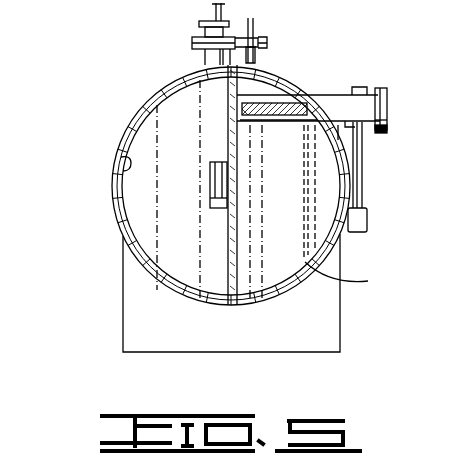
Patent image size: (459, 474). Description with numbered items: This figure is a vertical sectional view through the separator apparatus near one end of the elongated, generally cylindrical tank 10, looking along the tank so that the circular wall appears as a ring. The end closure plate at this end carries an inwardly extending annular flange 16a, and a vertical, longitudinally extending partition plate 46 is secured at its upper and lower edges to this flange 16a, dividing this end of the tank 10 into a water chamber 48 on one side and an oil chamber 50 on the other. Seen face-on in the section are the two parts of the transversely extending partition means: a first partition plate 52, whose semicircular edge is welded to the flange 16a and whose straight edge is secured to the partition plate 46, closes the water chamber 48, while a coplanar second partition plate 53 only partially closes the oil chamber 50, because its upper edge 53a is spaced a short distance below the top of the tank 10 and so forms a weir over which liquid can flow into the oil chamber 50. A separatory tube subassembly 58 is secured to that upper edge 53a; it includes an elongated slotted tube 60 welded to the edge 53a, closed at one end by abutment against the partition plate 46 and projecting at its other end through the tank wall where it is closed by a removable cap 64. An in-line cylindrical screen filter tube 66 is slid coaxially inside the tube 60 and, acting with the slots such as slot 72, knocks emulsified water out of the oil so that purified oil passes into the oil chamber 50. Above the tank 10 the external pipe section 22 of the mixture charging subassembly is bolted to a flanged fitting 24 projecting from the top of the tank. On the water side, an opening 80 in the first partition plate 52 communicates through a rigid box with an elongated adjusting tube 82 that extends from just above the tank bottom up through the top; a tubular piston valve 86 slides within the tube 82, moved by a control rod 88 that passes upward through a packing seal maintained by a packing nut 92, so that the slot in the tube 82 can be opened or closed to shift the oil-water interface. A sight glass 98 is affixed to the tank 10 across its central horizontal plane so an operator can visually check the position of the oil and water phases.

The tank 10 is at (117, 119).
The annular flange 16a is at (113, 181).
The external pipe section 22 is at (255, 25).
The flanged fitting 24 is at (252, 60).
The partition plate 46 is at (234, 222).
The water chamber 48 is at (153, 235).
The oil chamber 50 is at (303, 260).
The first partition plate 52 is at (190, 136).
The second partition plate 53 is at (302, 237).
The upper edge 53a is at (338, 138).
The separatory tube subassembly 58 is at (365, 102).
The tube 60 is at (381, 92).
The removable cap 64 is at (388, 103).
The screen filter tube 66 is at (294, 192).
The slot 72 is at (338, 92).
The opening 80 is at (210, 165).
The adjusting tube 82 is at (207, 52).
The tubular piston valve 86 is at (211, 199).
The control rod 88 is at (214, 13).
The packing nut 92 is at (205, 32).
The sight glass 98 is at (363, 168).